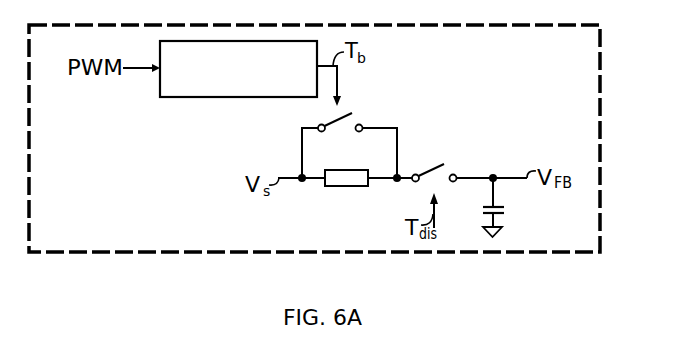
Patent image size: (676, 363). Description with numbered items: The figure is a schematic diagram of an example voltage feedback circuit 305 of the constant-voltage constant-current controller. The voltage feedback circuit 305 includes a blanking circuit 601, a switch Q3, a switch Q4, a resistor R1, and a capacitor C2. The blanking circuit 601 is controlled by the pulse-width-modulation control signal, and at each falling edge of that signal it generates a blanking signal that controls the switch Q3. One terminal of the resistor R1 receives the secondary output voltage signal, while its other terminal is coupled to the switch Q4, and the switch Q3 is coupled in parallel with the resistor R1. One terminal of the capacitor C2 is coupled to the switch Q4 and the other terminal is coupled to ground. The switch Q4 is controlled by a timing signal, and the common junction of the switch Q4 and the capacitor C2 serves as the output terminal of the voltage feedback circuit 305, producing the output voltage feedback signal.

The blanking circuit 601 is at (307, 91).
The voltage feedback circuit 305 is at (573, 111).
The switch Q3 is at (356, 101).
The switch Q4 is at (441, 166).
The resistor R1 is at (345, 187).
The capacitor C2 is at (507, 199).